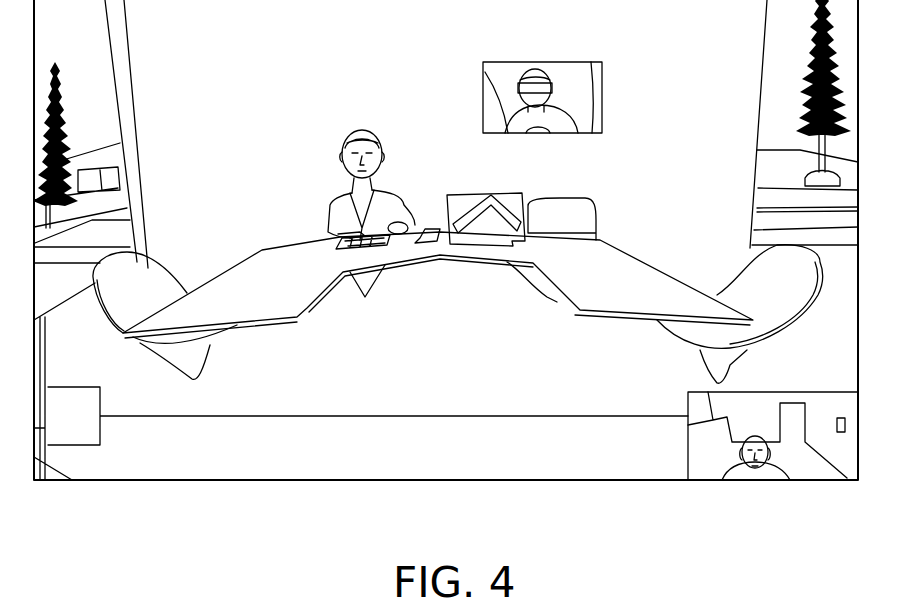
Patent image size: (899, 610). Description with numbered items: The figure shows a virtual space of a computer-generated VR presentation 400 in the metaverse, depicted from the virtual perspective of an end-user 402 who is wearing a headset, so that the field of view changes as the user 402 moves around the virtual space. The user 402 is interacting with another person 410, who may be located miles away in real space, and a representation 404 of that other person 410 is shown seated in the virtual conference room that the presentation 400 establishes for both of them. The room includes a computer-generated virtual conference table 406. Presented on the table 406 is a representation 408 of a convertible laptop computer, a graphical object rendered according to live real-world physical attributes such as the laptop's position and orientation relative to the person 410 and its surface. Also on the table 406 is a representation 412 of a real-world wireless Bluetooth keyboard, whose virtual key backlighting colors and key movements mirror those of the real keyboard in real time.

The VR presentation 400 is at (120, 480).
The end-user 402 is at (602, 95).
The representation of the other person 404 is at (343, 150).
The virtual conference table 406 is at (628, 289).
The representation of a convertible laptop computer 408 is at (468, 195).
The other person 410 is at (770, 480).
The representation of a wireless Bluetooth keyboard 412 is at (337, 256).